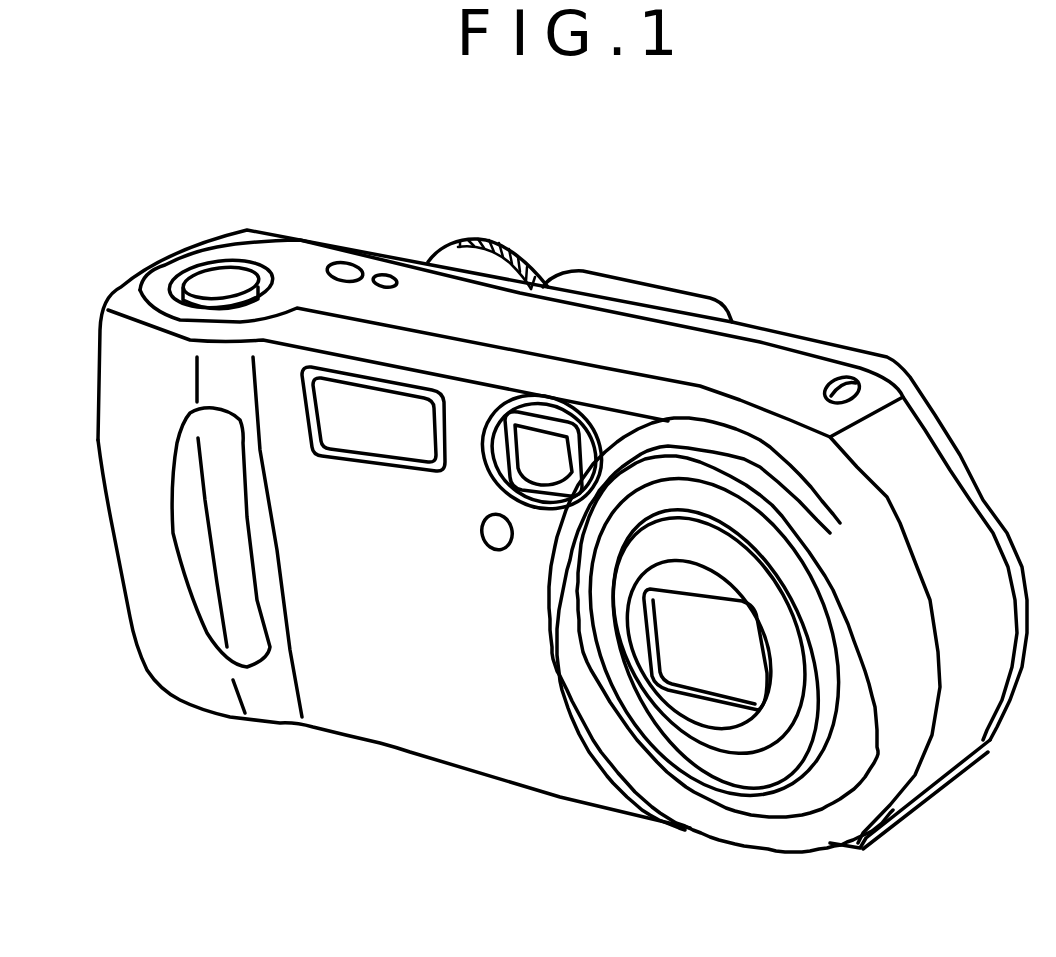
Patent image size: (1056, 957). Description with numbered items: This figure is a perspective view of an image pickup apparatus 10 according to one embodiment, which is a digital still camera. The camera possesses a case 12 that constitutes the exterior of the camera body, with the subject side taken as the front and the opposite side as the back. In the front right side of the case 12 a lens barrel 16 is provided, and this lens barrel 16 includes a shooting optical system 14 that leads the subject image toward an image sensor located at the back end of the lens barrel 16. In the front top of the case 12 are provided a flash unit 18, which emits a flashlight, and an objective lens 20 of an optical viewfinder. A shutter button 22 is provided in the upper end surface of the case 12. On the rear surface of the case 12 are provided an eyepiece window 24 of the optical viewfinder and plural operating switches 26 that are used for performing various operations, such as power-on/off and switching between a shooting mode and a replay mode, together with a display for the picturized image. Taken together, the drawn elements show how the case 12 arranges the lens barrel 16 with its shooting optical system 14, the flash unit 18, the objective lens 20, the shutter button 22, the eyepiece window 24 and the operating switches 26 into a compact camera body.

The image pickup apparatus 10 is at (781, 213).
The case 12 is at (135, 280).
The shooting optical system 14 is at (700, 648).
The lens barrel 16 is at (661, 786).
The flash unit 18 is at (380, 432).
The objective lens 20 is at (517, 470).
The shutter button 22 is at (223, 280).
The eyepiece window 24 is at (648, 283).
The operating switches 26 is at (493, 240).